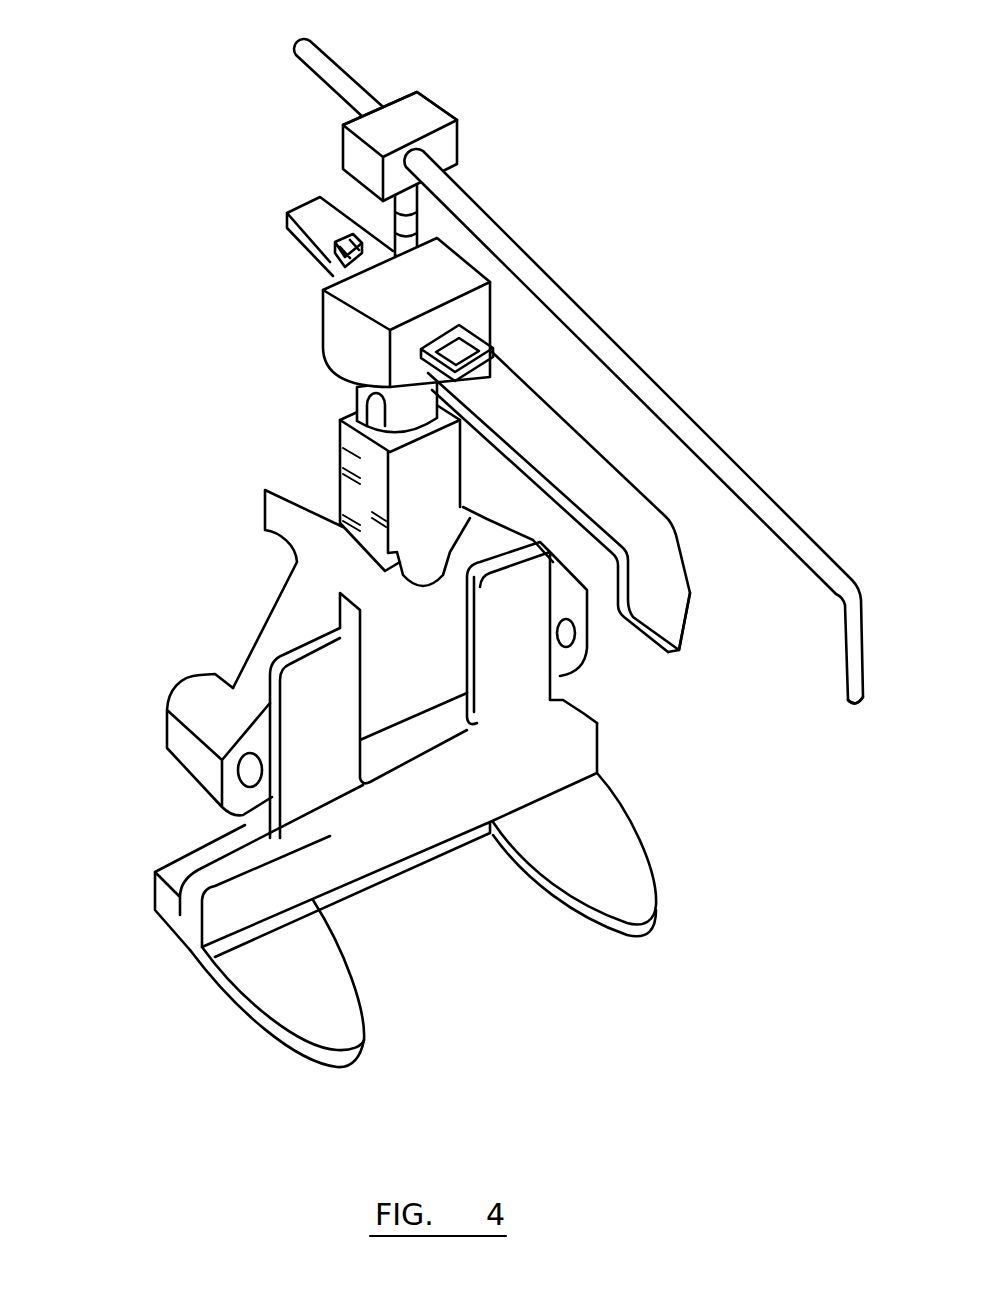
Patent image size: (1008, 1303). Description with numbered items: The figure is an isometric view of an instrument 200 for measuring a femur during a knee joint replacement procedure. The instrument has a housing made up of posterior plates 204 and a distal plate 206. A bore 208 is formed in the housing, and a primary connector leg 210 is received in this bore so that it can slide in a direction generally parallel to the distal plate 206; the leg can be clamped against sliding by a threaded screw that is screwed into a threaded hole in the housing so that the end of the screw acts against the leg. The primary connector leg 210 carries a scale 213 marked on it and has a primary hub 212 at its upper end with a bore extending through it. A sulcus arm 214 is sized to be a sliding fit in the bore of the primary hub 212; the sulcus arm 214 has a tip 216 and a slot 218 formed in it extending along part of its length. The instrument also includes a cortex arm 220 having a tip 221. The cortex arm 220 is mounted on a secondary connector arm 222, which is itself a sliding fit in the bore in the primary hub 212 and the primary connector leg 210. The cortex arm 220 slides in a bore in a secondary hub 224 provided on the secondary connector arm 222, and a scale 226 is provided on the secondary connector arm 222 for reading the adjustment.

The instrument 200 is at (170, 776).
The posterior plates 204 is at (595, 865).
The distal plate 206 is at (446, 816).
The bore 208 is at (355, 548).
The primary connector leg 210 is at (340, 435).
The primary hub 212 is at (342, 335).
The scale 213 is at (345, 491).
The sulcus arm 214 is at (660, 560).
The tip 216 is at (680, 648).
The slot 218 is at (492, 358).
The cortex arm 220 is at (533, 277).
The tip 221 is at (856, 708).
The secondary connector arm 222 is at (395, 207).
The secondary hub 224 is at (425, 117).
The scale 226 is at (407, 267).